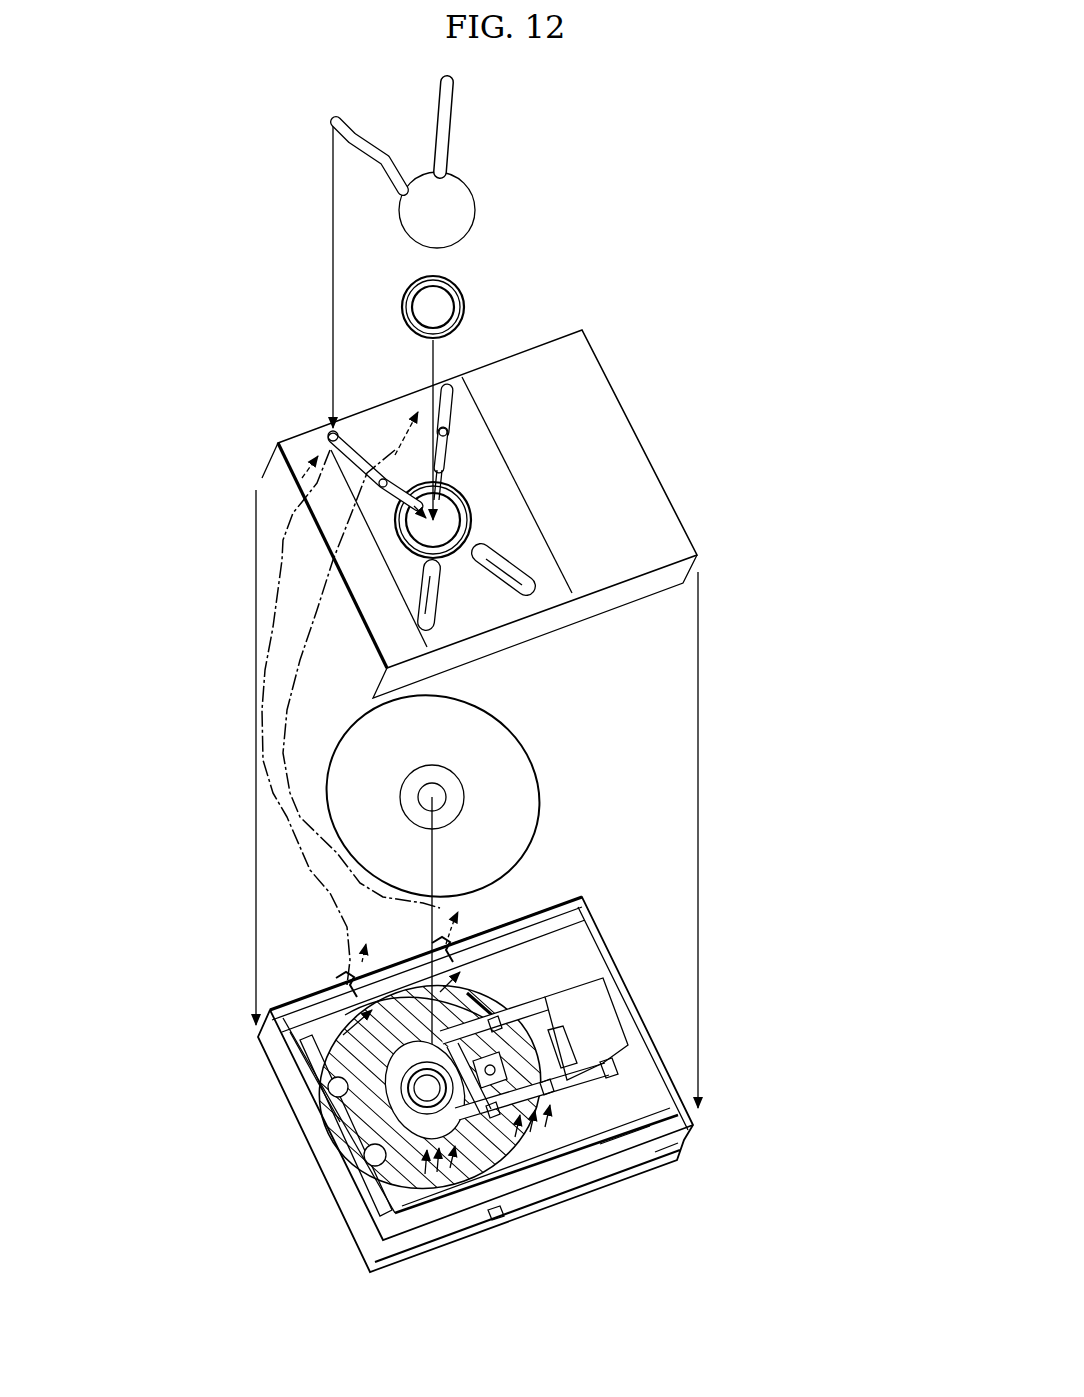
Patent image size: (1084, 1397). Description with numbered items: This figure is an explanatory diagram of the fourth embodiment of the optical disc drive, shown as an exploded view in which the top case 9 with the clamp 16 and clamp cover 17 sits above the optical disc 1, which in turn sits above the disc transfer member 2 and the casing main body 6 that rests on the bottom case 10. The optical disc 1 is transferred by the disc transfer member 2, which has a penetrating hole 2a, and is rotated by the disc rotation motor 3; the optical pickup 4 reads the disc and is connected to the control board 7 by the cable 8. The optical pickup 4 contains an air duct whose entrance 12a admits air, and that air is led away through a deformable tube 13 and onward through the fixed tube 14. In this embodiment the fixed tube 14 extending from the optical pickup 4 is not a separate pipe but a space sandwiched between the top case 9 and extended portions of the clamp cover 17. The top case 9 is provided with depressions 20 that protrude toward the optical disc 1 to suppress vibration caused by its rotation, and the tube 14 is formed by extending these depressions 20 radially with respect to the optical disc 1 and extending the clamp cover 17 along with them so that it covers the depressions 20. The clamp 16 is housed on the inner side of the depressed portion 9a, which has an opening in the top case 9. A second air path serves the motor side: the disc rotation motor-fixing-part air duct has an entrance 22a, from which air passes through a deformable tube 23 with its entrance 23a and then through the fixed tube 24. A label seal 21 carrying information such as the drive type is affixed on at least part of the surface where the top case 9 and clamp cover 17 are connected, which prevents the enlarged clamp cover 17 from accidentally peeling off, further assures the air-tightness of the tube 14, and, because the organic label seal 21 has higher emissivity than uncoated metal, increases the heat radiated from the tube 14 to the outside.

The optical disc 1 is at (510, 770).
The disc transfer member 2 is at (300, 1033).
The penetrating hole 2a is at (462, 1095).
The disc rotation motor 3 is at (357, 1167).
The optical pickup 4 is at (448, 1090).
The casing main body 6 is at (594, 1157).
The control board 7 is at (636, 1160).
The cable 8 is at (572, 1050).
The top case 9 is at (293, 443).
The depressed portion 9a is at (582, 617).
The bottom case 10 is at (668, 1160).
The entrance of the air duct 12a is at (553, 1105).
The deformable tube 13 is at (480, 977).
The fixed tube 14 is at (447, 402).
The clamp 16 is at (433, 300).
The clamp cover 17 is at (457, 201).
The depressions 20 is at (500, 566).
The label seal 21 is at (545, 572).
The entrance of the disc rotation motor-fixing-part air duct 22a is at (437, 1152).
The deformable tube 23 is at (345, 1033).
The entrance of the tube 23a is at (340, 1120).
The fixed tube 24 is at (333, 430).